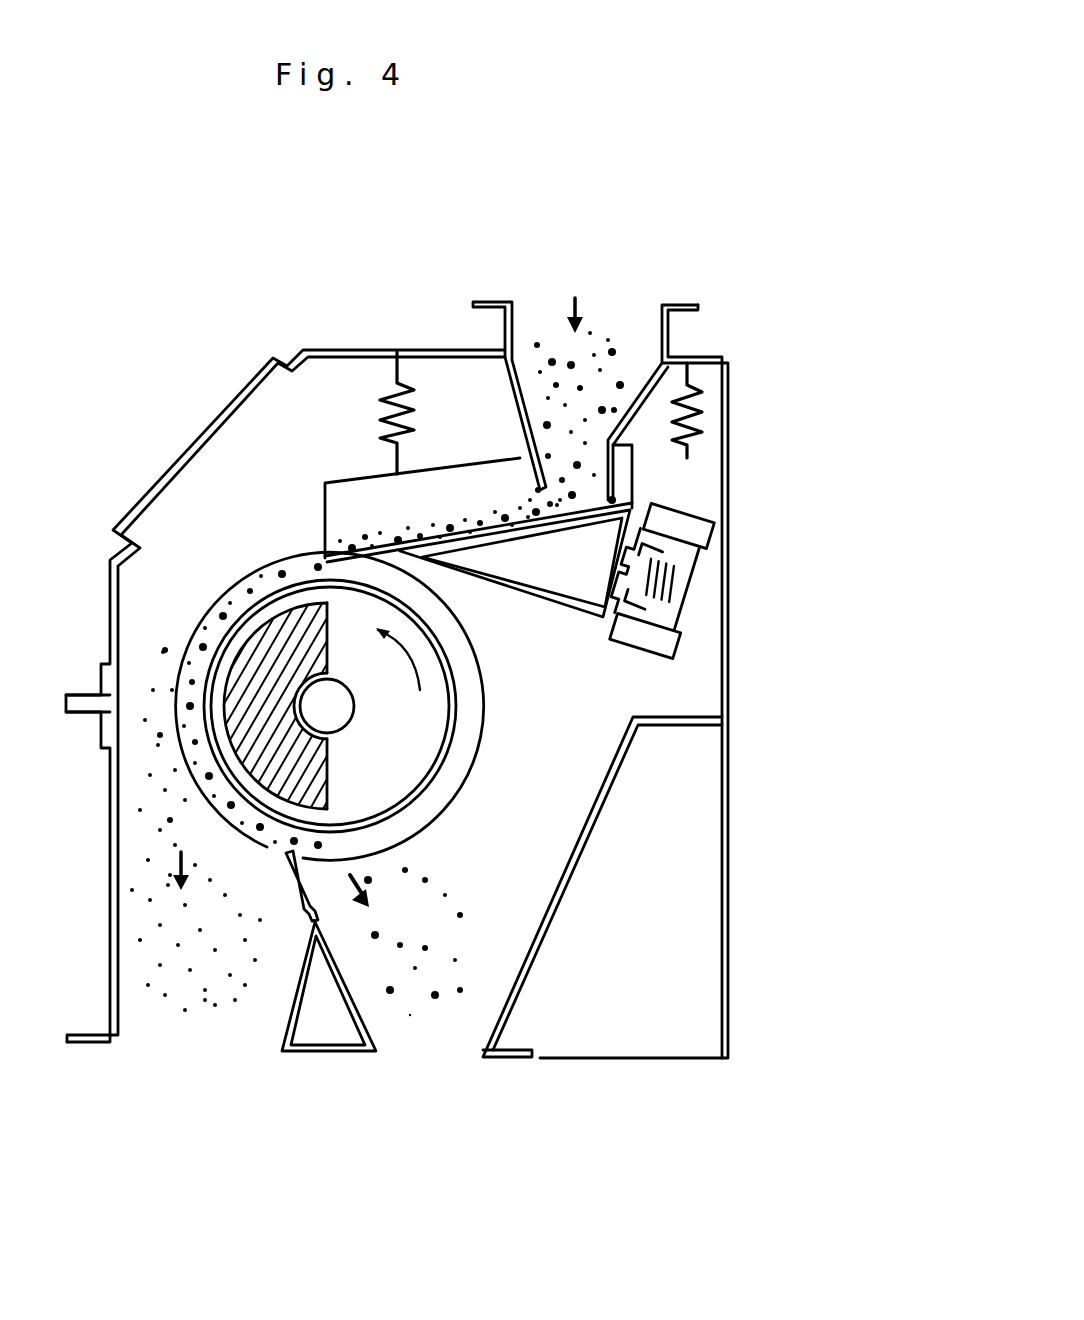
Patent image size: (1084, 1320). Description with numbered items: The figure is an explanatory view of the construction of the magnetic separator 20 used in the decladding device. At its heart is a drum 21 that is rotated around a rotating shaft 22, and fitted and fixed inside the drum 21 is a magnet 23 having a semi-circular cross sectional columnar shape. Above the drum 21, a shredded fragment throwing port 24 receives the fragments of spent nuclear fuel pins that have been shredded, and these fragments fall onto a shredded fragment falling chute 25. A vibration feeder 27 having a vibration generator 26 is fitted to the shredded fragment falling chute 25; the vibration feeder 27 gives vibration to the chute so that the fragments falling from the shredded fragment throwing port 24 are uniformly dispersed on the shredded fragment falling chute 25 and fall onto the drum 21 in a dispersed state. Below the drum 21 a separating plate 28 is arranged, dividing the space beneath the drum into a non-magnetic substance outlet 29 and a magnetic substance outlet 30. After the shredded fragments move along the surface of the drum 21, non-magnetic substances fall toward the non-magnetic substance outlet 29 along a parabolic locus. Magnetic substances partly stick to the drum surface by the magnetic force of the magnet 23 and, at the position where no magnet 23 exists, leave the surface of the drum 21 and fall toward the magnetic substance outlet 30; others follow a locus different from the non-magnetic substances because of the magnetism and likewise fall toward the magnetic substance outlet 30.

The magnetic separator 20 is at (763, 418).
The drum 21 is at (452, 750).
The rotating shaft 22 is at (340, 713).
The magnet 23 is at (323, 787).
The shredded fragment throwing port 24 is at (620, 322).
The shredded fragment falling chute 25 is at (365, 500).
The vibration generator 26 is at (690, 578).
The vibration feeder 27 is at (500, 592).
The separating plate 28 is at (303, 893).
The non-magnetic substance outlet 29 is at (165, 1012).
The magnetic substance outlet 30 is at (433, 1022).